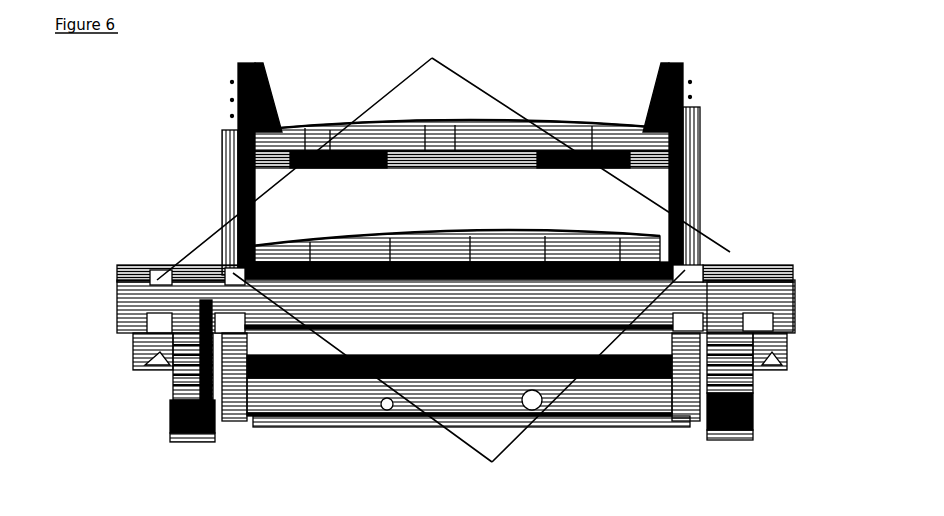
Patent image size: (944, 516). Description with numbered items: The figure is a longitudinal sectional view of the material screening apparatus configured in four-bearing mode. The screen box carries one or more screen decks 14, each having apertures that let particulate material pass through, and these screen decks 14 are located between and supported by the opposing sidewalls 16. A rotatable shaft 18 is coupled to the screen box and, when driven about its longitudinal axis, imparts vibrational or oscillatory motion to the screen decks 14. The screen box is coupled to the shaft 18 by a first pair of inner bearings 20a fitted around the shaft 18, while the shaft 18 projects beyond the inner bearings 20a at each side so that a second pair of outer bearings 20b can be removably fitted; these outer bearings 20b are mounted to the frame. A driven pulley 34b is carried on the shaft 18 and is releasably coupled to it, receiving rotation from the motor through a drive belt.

The screen deck 14 is at (566, 106).
The sidewall 16 is at (222, 176).
The rotatable shaft 18 is at (765, 278).
The first pair of bearings 20a is at (459, 380).
The second pair of bearings 20b is at (443, 158).
The driven pulley 34b is at (122, 320).